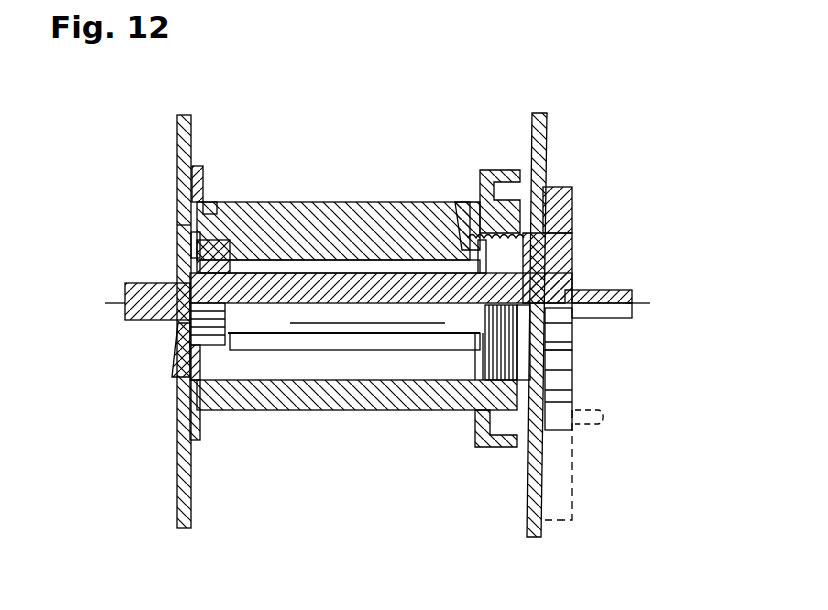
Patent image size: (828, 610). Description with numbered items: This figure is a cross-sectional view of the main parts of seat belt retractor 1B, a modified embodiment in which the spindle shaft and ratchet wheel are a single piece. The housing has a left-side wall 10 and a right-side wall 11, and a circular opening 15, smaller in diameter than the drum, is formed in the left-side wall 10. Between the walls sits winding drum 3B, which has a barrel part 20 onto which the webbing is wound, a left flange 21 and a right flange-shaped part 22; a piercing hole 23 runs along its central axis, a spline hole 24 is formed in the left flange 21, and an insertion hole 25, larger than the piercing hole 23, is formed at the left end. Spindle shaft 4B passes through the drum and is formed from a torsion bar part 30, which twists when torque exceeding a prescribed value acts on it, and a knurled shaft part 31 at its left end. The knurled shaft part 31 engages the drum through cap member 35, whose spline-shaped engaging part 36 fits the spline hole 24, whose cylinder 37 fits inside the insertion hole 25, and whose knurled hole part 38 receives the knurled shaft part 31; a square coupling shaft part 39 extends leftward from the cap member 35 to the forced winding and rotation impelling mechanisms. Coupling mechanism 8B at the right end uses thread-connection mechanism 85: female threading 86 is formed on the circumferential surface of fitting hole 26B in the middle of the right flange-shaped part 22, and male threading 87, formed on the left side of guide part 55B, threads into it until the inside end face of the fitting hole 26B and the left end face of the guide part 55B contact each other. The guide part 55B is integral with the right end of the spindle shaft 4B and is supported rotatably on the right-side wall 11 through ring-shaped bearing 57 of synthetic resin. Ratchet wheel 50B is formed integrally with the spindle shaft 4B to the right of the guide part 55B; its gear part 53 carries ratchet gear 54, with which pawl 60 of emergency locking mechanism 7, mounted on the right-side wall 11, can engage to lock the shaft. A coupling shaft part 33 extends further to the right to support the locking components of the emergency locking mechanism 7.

The seat belt retractor 1B is at (585, 95).
The winding drum 3B is at (306, 418).
The spindle shaft 4B is at (410, 357).
The emergency locking mechanism 7 is at (606, 448).
The coupling mechanism 8B is at (432, 166).
The left-side wall 10 is at (181, 140).
The right-side wall 11 is at (548, 137).
The circular opening 15 is at (176, 236).
The barrel part 20 is at (322, 201).
The left flange 21 is at (198, 442).
The right flange-shaped part 22 is at (500, 448).
The piercing hole 23 is at (372, 266).
The spline hole 24 is at (178, 340).
The insertion hole 25 is at (180, 245).
The fitting hole 26B is at (470, 232).
The torsion bar part 30 is at (366, 345).
The knurled shaft part 31 is at (165, 320).
The coupling shaft part 33 is at (632, 290).
The cap member 35 is at (128, 327).
The engaging part 36 is at (198, 168).
The cylinder 37 is at (210, 205).
The knurled hole part 38 is at (236, 258).
The coupling shaft part 39 is at (128, 288).
The ratchet wheel 50B is at (574, 376).
The gear part 53 is at (565, 190).
The ratchet gear 54 is at (574, 408).
The guide part 55B is at (556, 247).
The ring-shaped bearing 57 is at (560, 335).
The pawl 60 is at (580, 470).
The thread-connection mechanism 85 is at (484, 153).
The female threading 86 is at (466, 248).
The male threading 87 is at (489, 185).